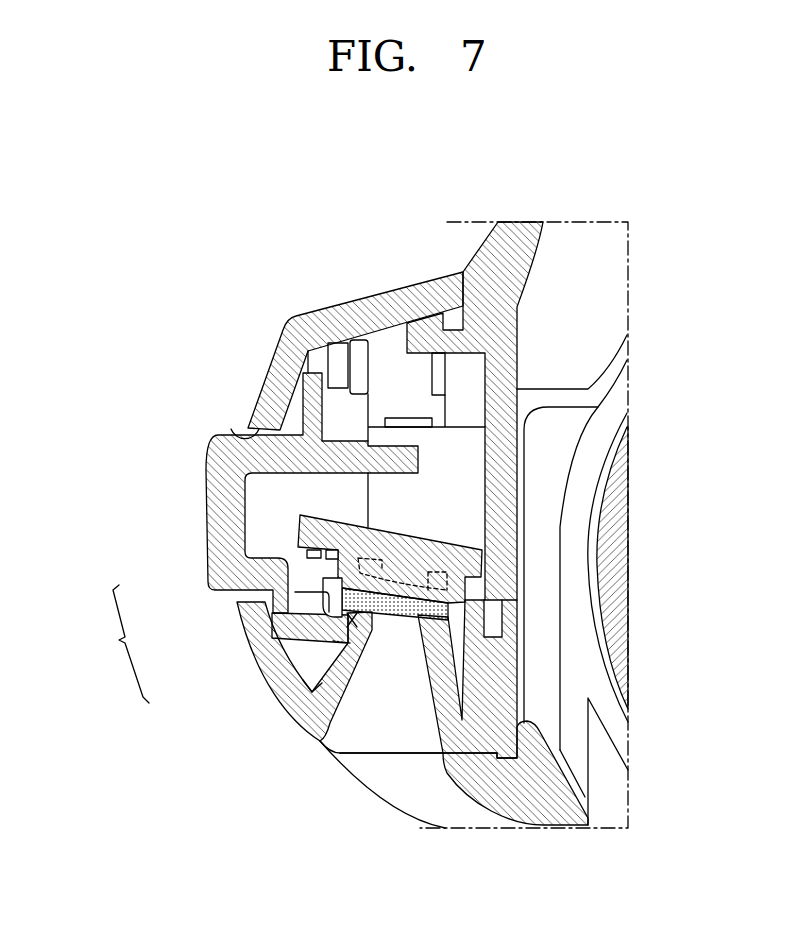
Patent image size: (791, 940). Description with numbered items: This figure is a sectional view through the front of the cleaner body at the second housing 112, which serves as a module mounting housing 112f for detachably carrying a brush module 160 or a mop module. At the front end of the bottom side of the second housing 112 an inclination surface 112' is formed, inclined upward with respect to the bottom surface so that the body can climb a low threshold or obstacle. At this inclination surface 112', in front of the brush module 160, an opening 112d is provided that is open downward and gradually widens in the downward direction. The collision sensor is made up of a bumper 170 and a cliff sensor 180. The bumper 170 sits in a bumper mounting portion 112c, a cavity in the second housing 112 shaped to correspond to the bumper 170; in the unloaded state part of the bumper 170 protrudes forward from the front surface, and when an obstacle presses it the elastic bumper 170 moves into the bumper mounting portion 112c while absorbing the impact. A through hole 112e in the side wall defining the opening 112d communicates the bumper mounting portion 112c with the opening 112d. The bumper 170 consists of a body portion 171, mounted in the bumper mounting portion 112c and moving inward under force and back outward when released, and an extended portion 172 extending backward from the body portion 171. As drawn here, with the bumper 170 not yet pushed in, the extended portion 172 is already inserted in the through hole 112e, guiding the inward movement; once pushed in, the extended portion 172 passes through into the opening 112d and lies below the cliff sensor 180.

The second housing 112 is at (390, 490).
The bumper mounting portion 112c is at (234, 433).
The opening 112d is at (388, 704).
The through hole 112e is at (311, 694).
The module mounting housing 112f is at (514, 808).
The inclination surface 112' is at (382, 816).
The brush module 160 is at (617, 563).
The bumper 170 is at (120, 644).
The body portion 171 is at (215, 563).
The extended portion 172 is at (305, 631).
The cliff sensor 180 is at (448, 613).